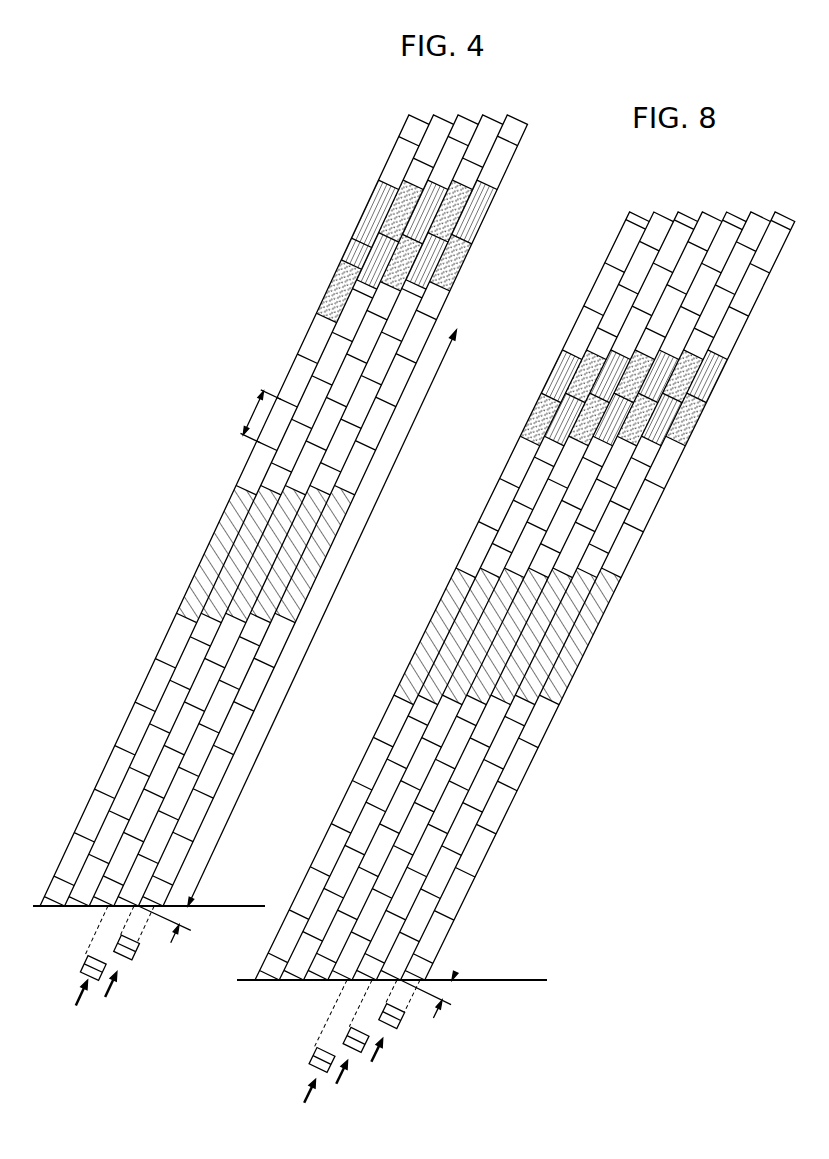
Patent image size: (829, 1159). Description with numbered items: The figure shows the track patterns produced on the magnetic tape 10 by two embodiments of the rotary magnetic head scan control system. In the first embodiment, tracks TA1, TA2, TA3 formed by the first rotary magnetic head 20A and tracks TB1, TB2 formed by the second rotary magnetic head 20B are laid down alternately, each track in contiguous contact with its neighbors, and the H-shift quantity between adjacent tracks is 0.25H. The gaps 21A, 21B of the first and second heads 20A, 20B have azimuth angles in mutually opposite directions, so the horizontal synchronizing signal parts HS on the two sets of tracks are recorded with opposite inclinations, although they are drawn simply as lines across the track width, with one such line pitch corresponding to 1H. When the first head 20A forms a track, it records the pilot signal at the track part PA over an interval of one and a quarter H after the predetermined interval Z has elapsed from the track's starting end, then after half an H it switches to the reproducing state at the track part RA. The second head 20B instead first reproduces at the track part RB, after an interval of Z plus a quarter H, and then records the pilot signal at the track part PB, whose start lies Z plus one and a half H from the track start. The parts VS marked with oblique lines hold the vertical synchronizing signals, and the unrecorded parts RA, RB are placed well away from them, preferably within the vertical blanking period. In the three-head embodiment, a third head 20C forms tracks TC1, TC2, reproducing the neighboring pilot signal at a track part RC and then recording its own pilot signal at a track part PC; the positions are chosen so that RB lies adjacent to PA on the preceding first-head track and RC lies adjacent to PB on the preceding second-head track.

In FIG. 4, the track formed by first head TA1 is at (518, 118).
In FIG. 8, the track formed by first head TA1 is at (784, 214).
In FIG. 4, the track formed by first head TA2 is at (469, 118).
In FIG. 8, the track formed by first head TA2 is at (711, 214).
In FIG. 4, the track formed by first head TA3 is at (419, 117).
In FIG. 8, the track formed by first head TA3 is at (638, 214).
In FIG. 4, the track formed by second head TB1 is at (494, 117).
In FIG. 8, the track formed by second head TB1 is at (760, 214).
In FIG. 4, the track formed by second head TB2 is at (444, 117).
In FIG. 8, the track formed by second head TB2 is at (687, 214).
In FIG. 8, the track formed by third head TC1 is at (736, 214).
In FIG. 8, the track formed by third head TC2 is at (663, 214).
In FIG. 4, the pilot signal recording track part PA is at (390, 294).
In FIG. 8, the pilot signal recording track part PA is at (692, 418).
In FIG. 4, the pilot signal recording track part PB is at (397, 217).
In FIG. 8, the pilot signal recording track part PB is at (650, 463).
In FIG. 8, the pilot signal recording track part PC is at (660, 362).
In FIG. 4, the reproducing track part RA is at (413, 173).
In FIG. 8, the reproducing track part RA is at (707, 378).
In FIG. 4, the reproducing track part RB is at (377, 262).
In FIG. 8, the reproducing track part RB is at (683, 441).
In FIG. 8, the reproducing track part RC is at (623, 484).
In FIG. 4, the vertical synchronizing signal recorded parts VS is at (322, 545).
In FIG. 8, the vertical synchronizing signal recorded parts VS is at (583, 624).
In FIG. 4, the horizontal synchronizing signal parts HS is at (172, 812).
In FIG. 4, the predetermined interval Z is at (322, 618).
In FIG. 4, the horizontal period 1H is at (251, 412).
In FIG. 4, the H-shift quantity 0.25H is at (184, 913).
In FIG. 8, the H-shift quantity 0.25H is at (447, 987).
In FIG. 4, the magnetic tape 10 is at (247, 908).
In FIG. 8, the magnetic tape 10 is at (523, 982).
In FIG. 4, the first rotary magnetic head 20A is at (140, 950).
In FIG. 8, the first rotary magnetic head 20A is at (403, 1027).
In FIG. 4, the second rotary magnetic head 20B is at (87, 950).
In FIG. 8, the second rotary magnetic head 20B is at (354, 1058).
In FIG. 8, the third head 20C is at (310, 1056).
In FIG. 4, the gap of first head 21A is at (128, 966).
In FIG. 4, the gap of second head 21B is at (95, 997).